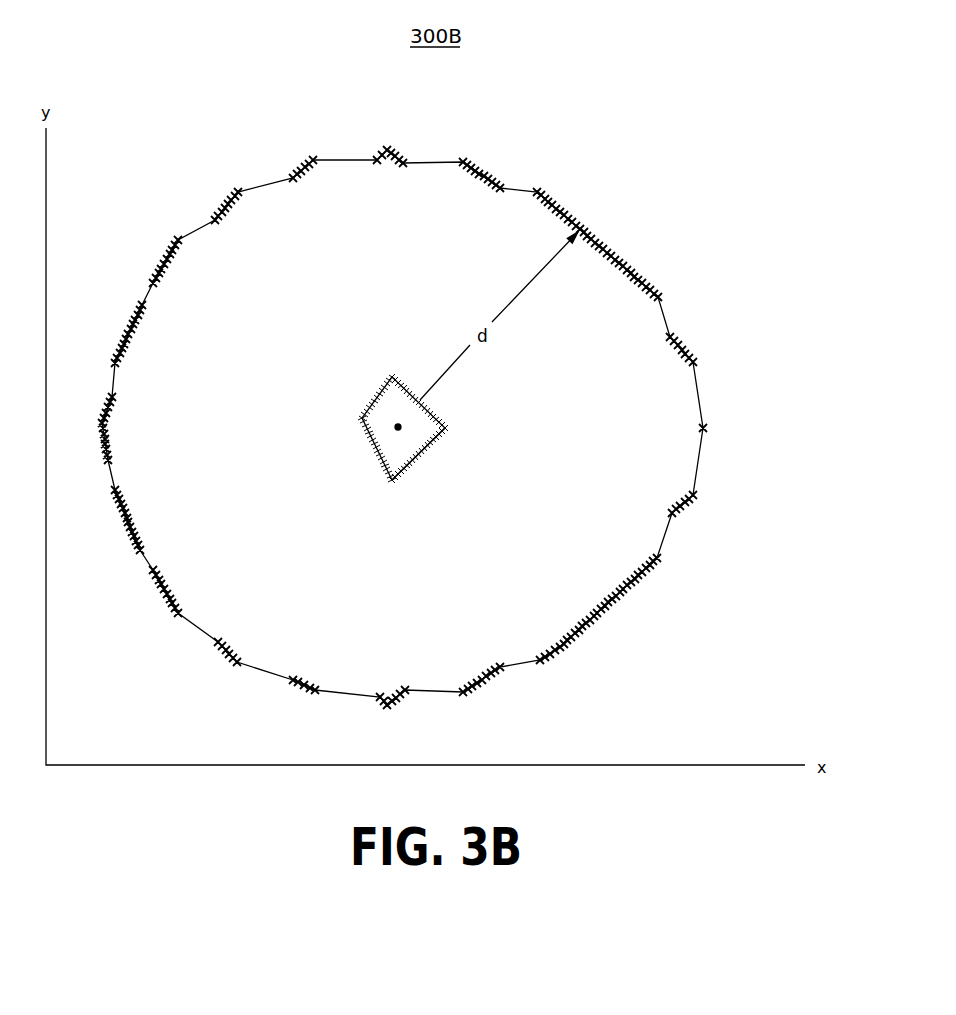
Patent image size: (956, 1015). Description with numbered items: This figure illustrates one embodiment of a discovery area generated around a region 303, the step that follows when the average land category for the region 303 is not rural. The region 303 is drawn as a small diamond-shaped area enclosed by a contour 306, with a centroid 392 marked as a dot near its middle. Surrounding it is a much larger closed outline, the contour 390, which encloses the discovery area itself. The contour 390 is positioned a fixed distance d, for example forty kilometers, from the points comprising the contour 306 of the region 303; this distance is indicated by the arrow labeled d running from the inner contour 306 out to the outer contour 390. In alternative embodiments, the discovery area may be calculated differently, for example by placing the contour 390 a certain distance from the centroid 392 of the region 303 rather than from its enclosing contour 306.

The contour 390 is at (633, 268).
The region 303 is at (403, 384).
The contour 306 is at (424, 458).
The centroid 392 is at (395, 427).